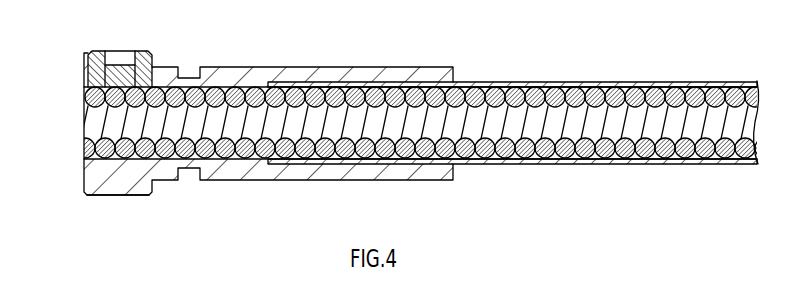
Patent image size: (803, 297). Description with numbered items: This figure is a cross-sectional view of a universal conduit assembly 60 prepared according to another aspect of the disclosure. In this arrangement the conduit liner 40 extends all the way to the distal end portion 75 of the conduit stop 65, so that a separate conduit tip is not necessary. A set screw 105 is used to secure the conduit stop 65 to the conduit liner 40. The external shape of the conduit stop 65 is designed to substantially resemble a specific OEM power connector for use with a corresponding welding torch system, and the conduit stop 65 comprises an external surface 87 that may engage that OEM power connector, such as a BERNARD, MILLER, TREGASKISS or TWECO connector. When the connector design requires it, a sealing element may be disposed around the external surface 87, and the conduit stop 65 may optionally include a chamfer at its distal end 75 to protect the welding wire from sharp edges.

The conduit liner 40 is at (650, 120).
The universal conduit assembly 60 is at (478, 53).
The conduit stop 65 is at (228, 87).
The distal end portion 75 is at (85, 53).
The external surface 87 is at (117, 197).
The set screw 105 is at (122, 50).